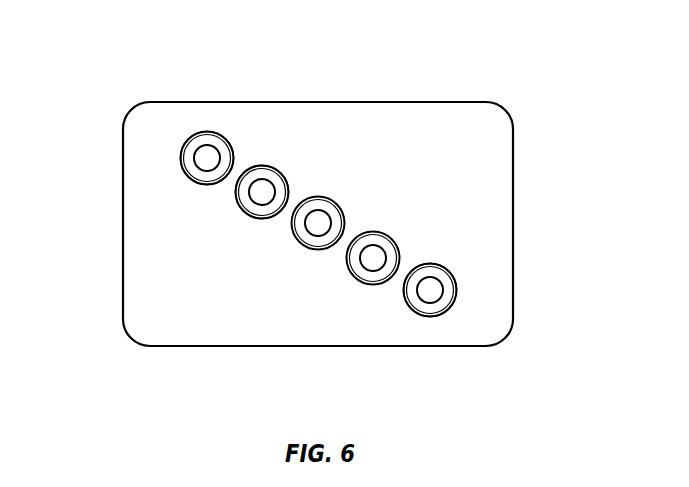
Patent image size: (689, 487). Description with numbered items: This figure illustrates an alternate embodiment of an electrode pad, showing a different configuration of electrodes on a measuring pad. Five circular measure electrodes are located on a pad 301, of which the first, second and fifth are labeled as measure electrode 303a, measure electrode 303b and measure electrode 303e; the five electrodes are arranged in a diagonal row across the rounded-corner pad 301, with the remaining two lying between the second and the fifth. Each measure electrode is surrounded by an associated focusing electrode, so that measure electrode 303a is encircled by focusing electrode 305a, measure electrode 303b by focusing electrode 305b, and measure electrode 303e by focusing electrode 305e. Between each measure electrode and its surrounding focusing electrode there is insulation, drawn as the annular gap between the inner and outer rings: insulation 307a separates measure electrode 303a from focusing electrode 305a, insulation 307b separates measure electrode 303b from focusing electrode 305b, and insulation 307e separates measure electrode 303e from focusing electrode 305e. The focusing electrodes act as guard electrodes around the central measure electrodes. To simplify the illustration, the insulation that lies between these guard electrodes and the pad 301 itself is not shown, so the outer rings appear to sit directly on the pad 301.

The pad 301 is at (420, 125).
The measure electrode 303a is at (207, 158).
The focusing electrode 305a is at (181, 158).
The insulation 307a is at (207, 184).
The measure electrode 303b is at (262, 192).
The focusing electrode 305b is at (288, 192).
The insulation 307b is at (262, 218).
The measure electrode 303e is at (430, 290).
The focusing electrode 305e is at (457, 290).
The insulation 307e is at (430, 303).